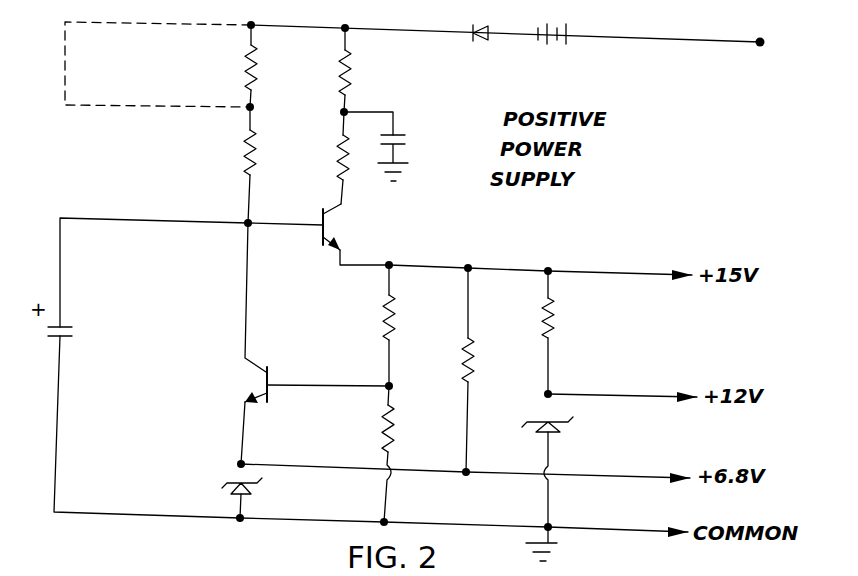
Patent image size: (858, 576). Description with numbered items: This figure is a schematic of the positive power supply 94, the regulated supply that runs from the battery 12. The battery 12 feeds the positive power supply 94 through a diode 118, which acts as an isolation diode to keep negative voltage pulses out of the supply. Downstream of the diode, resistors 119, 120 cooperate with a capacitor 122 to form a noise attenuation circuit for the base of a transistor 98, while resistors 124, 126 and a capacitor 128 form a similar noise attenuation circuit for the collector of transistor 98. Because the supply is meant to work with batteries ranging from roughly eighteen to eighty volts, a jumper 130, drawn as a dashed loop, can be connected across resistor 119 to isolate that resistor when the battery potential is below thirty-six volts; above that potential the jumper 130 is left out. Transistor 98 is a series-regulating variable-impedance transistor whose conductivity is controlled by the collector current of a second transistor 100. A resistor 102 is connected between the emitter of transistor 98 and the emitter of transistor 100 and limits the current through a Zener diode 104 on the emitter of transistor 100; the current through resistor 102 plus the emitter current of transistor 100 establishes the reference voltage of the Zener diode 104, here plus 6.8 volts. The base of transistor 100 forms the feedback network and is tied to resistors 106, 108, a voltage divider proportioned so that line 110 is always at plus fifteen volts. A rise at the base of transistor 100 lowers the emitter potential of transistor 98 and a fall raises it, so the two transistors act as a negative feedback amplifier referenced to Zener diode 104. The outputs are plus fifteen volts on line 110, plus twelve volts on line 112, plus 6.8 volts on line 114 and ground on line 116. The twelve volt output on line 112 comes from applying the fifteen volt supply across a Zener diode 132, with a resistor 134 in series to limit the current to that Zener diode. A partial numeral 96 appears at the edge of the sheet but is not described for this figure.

The positive power supply 94 is at (780, 78).
The jumper 130 is at (62, 38).
The resistor 119 is at (245, 67).
The resistor 120 is at (244, 154).
The resistor 124 is at (351, 60).
The resistor 126 is at (338, 155).
The capacitor 128 is at (400, 141).
The diode 118 is at (483, 24).
The battery 12 is at (562, 18).
The transistor 98 is at (333, 228).
The transistor 100 is at (262, 385).
The capacitor 122 is at (70, 333).
The resistor 106 is at (385, 312).
The resistor 108 is at (385, 433).
The resistor 102 is at (464, 348).
The resistor 134 is at (553, 314).
The Zener diode 132 is at (524, 426).
The Zener diode 104 is at (222, 486).
The line 110 is at (598, 273).
The line 112 is at (639, 377).
The line 114 is at (593, 478).
The line 116 is at (598, 533).
The negative power supply 96 is at (7, 566).